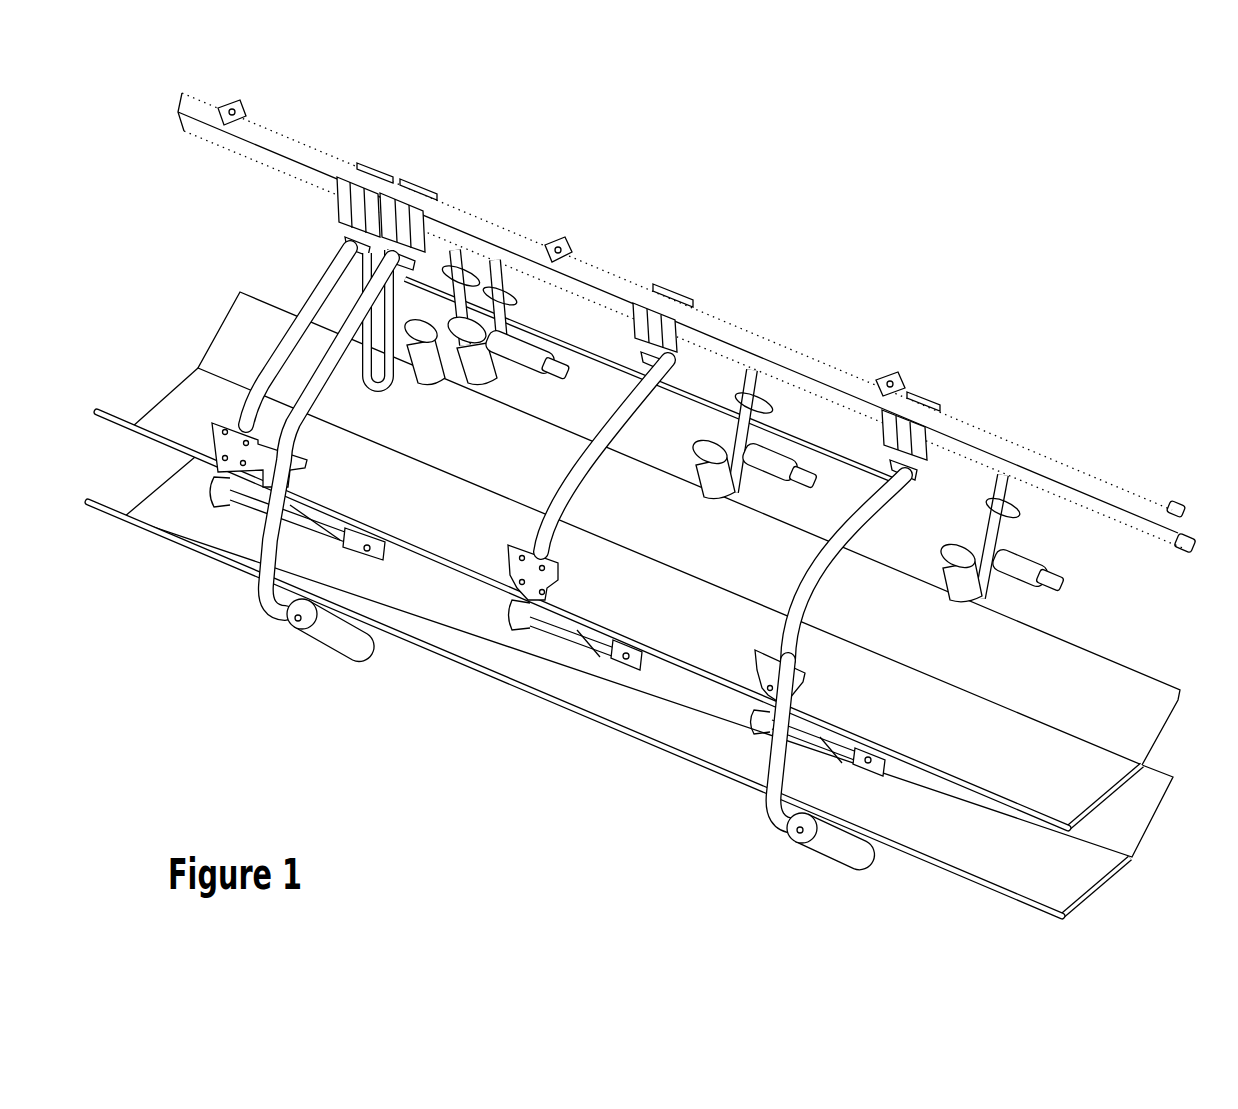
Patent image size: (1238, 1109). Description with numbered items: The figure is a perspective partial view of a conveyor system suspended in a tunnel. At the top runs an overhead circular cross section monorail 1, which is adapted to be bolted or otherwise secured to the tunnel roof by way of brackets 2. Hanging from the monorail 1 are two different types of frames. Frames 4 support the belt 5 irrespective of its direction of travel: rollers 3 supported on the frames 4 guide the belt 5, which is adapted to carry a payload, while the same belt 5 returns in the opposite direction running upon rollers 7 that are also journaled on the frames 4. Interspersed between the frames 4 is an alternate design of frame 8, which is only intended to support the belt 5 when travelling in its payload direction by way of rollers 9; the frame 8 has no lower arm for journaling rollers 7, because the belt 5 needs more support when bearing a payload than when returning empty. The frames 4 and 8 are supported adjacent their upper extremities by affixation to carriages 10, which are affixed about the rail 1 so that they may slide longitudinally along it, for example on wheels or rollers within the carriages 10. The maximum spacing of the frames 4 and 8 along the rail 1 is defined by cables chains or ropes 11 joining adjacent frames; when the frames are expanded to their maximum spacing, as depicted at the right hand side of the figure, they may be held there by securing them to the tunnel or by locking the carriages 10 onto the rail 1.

The monorail 1 is at (1067, 473).
The brackets 2 is at (555, 248).
The rollers 3 is at (710, 470).
The frames 4 is at (308, 382).
The belt 5 is at (1072, 657).
The rollers 7 is at (823, 838).
The frame 8 is at (620, 418).
The rollers 9 is at (508, 615).
The carriages 10 is at (337, 190).
The cables chains or ropes 11 is at (582, 347).